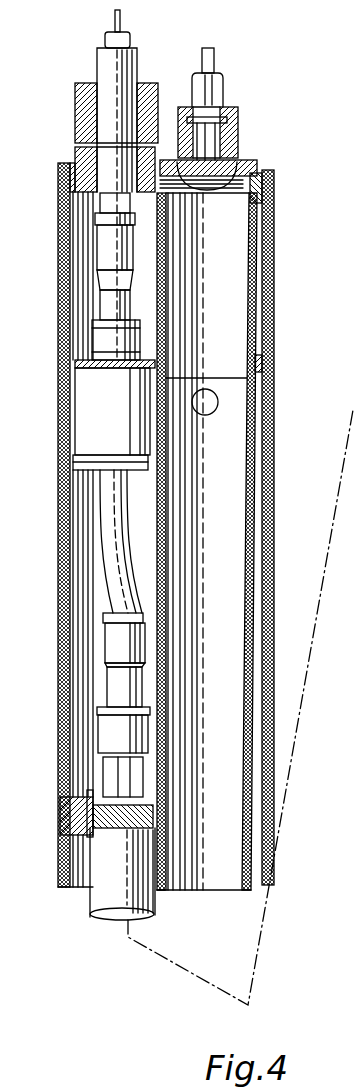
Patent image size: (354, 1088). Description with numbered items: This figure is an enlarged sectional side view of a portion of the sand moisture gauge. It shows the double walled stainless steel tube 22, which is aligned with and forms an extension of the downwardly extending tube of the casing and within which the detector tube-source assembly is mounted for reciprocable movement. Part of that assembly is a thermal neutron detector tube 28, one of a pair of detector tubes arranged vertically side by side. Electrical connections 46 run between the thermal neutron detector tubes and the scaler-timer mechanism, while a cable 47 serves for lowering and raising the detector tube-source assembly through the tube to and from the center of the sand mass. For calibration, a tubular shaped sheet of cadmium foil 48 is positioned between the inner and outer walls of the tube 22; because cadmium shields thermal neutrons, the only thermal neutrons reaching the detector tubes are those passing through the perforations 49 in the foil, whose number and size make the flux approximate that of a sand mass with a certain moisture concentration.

The double walled stainless steel tube 22 is at (275, 474).
The thermal neutron detector tube 28 is at (90, 905).
The electrical connections 46 is at (100, 247).
The cable 47 is at (205, 65).
The cadmium foil 48 is at (263, 370).
The perforations 49 is at (263, 420).